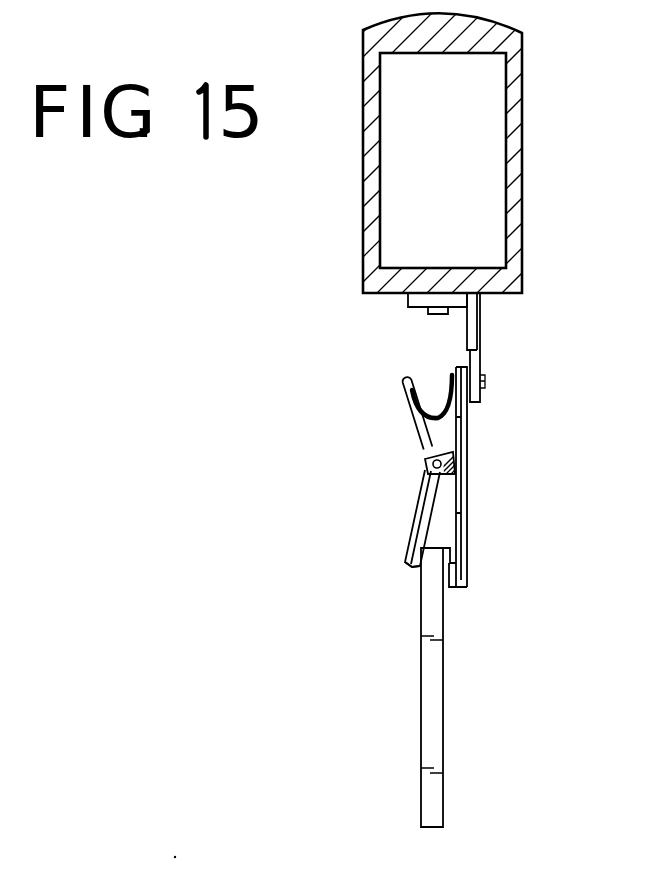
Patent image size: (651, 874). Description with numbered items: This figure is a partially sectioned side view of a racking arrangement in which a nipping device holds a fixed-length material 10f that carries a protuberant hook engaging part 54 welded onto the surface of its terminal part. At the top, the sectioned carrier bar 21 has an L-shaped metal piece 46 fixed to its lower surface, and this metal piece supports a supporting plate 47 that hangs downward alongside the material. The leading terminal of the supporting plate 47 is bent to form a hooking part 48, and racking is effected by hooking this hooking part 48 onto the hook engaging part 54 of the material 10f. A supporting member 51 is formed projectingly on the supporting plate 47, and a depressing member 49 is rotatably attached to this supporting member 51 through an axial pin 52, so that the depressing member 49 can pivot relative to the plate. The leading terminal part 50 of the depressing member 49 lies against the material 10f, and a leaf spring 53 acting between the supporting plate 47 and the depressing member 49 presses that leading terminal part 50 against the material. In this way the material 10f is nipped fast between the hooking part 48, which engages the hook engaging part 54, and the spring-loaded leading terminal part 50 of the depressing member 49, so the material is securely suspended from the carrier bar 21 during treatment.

The carrier bar 21 is at (363, 200).
The L-shaped metal piece 46 is at (481, 336).
The supporting plate 47 is at (467, 500).
The hooking part 48 is at (457, 590).
The depressing member 49 is at (413, 520).
The leading terminal part 50 is at (412, 568).
The supporting member 51 is at (462, 458).
The axial pin 52 is at (432, 463).
The leaf spring 53 is at (431, 398).
The hook engaging part 54 is at (452, 553).
The fixed-length material 10f is at (421, 746).